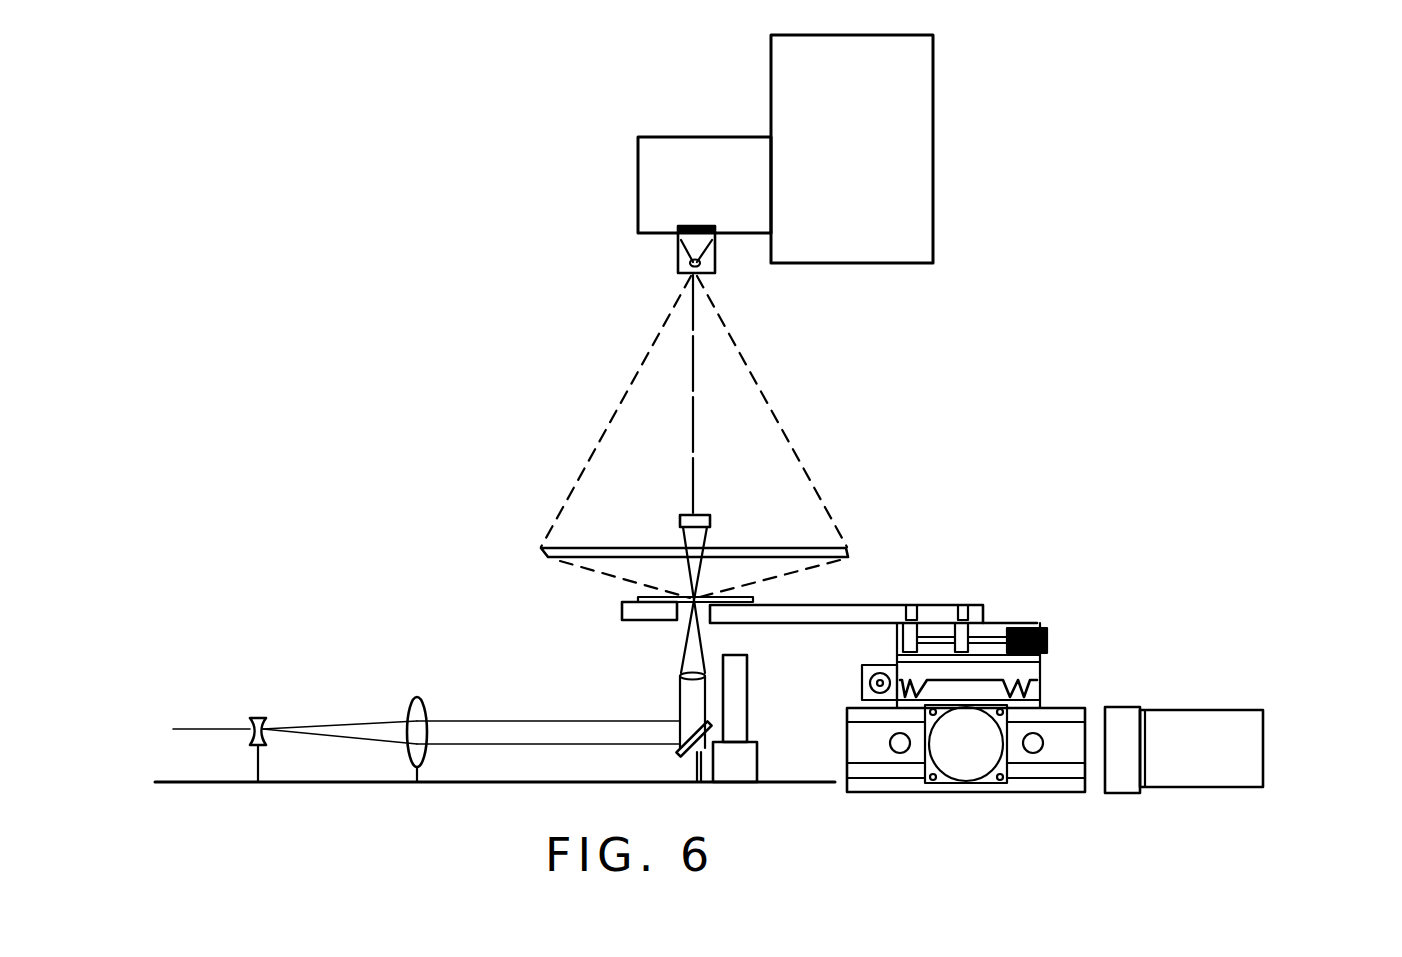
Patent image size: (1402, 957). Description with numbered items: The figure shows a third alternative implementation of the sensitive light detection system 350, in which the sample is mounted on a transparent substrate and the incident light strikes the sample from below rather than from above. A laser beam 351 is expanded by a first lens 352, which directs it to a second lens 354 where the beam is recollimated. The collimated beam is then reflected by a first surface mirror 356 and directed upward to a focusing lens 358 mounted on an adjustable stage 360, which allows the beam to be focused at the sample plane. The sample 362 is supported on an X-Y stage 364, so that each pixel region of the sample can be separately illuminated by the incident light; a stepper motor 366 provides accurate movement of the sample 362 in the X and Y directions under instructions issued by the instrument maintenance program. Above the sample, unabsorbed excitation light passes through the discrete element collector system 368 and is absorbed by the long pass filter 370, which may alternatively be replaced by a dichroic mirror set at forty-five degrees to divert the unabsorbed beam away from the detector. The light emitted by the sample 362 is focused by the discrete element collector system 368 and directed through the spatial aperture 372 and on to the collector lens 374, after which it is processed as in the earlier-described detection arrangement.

The sensitive light detection system 350 is at (168, 258).
The laser beam 351 is at (198, 728).
The first lens 352 is at (262, 718).
The second lens 354 is at (420, 697).
The first surface mirror 356 is at (680, 757).
The focusing lens 358 is at (722, 683).
The adjustable stage 360 is at (747, 720).
The sample 362 is at (692, 598).
The X-Y stage 364 is at (1040, 697).
The stepper motor 366 is at (1263, 735).
The discrete element collector system 368 is at (541, 553).
The long pass filter 370 is at (680, 517).
The spatial aperture 372 is at (692, 274).
The collector lens 374 is at (680, 270).